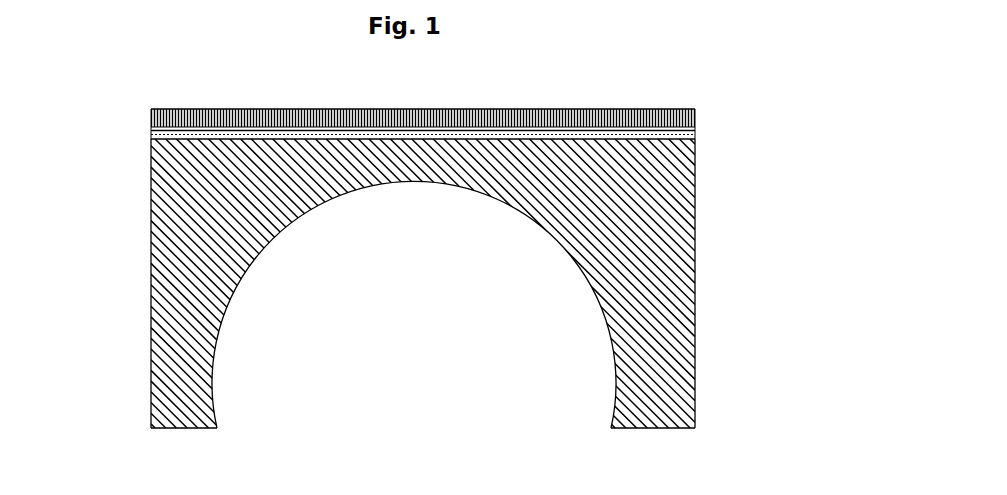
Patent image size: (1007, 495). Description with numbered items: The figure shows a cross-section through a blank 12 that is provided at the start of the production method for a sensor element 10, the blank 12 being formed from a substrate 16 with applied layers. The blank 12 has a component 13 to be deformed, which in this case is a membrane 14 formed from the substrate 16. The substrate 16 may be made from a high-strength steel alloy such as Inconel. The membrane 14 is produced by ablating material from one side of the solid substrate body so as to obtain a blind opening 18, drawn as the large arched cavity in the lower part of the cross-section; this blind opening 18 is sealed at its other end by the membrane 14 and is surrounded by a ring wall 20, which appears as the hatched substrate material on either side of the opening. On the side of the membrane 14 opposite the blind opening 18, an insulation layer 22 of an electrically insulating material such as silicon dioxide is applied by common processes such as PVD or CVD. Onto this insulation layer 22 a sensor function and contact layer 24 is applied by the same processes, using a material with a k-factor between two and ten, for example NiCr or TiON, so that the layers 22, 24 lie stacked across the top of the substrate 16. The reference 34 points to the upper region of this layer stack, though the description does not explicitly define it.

The sensor element 10 is at (96, 76).
The blank 12 is at (590, 76).
The component to be deformed 13 is at (151, 263).
The membrane 14 is at (427, 186).
The substrate 16 is at (665, 265).
The blind opening 18 is at (474, 386).
The ring wall 20 is at (670, 327).
The insulation layer 22 is at (692, 130).
The sensor function and contact layer 24 is at (692, 109).
The top surface 34 is at (279, 100).